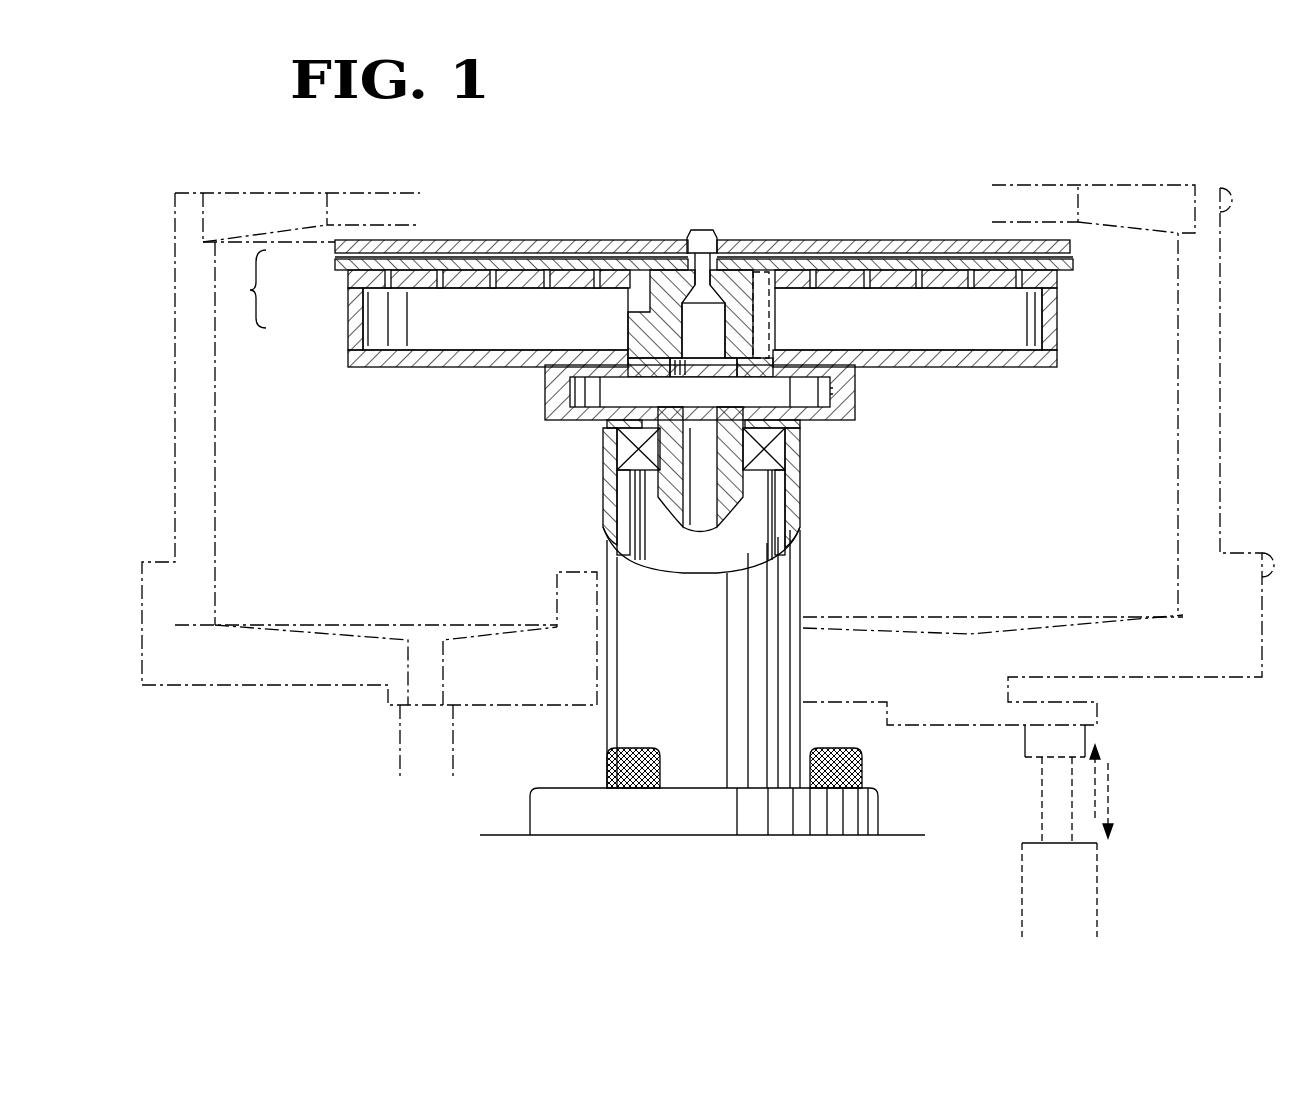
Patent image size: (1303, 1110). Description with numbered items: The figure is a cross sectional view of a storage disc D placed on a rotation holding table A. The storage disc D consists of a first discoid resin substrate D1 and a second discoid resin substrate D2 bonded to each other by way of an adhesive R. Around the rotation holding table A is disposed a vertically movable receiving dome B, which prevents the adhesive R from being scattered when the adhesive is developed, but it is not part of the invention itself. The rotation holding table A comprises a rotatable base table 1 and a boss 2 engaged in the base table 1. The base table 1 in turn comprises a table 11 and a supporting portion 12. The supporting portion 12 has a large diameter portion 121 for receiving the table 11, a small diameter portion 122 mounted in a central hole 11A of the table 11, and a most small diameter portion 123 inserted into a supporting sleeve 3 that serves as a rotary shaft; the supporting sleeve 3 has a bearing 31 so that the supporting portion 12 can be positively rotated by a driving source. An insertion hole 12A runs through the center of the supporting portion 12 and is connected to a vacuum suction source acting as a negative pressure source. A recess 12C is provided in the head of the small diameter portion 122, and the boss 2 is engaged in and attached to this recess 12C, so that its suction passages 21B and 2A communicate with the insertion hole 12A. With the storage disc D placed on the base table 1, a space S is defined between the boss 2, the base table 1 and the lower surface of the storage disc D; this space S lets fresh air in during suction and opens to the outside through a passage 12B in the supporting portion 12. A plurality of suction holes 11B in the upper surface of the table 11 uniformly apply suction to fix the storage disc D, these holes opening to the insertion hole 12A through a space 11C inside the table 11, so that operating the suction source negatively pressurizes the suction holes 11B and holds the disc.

The base table 1 is at (913, 392).
The boss 2 is at (701, 228).
The suction passage 2A is at (720, 353).
The suction passage 21B is at (690, 243).
The supporting sleeve 3 is at (790, 512).
The bearing 31 is at (780, 450).
The table 11 is at (1050, 327).
The central hole 11A is at (648, 268).
The suction holes 11B is at (437, 285).
The space 11C is at (960, 337).
The supporting portion 12 is at (543, 421).
The insertion hole 12A is at (705, 497).
The passage 12B is at (773, 303).
The recess 12C is at (645, 301).
The large diameter portion 121 is at (545, 388).
The small diameter portion 122 is at (628, 333).
The most small diameter portion 123 is at (667, 483).
The rotation holding table A is at (840, 212).
The receiving dome B is at (1227, 391).
The adhesive R is at (490, 248).
The space S is at (733, 272).
The storage disc D is at (244, 289).
The first discoid resin substrate D1 is at (336, 266).
The second discoid resin substrate D2 is at (337, 247).